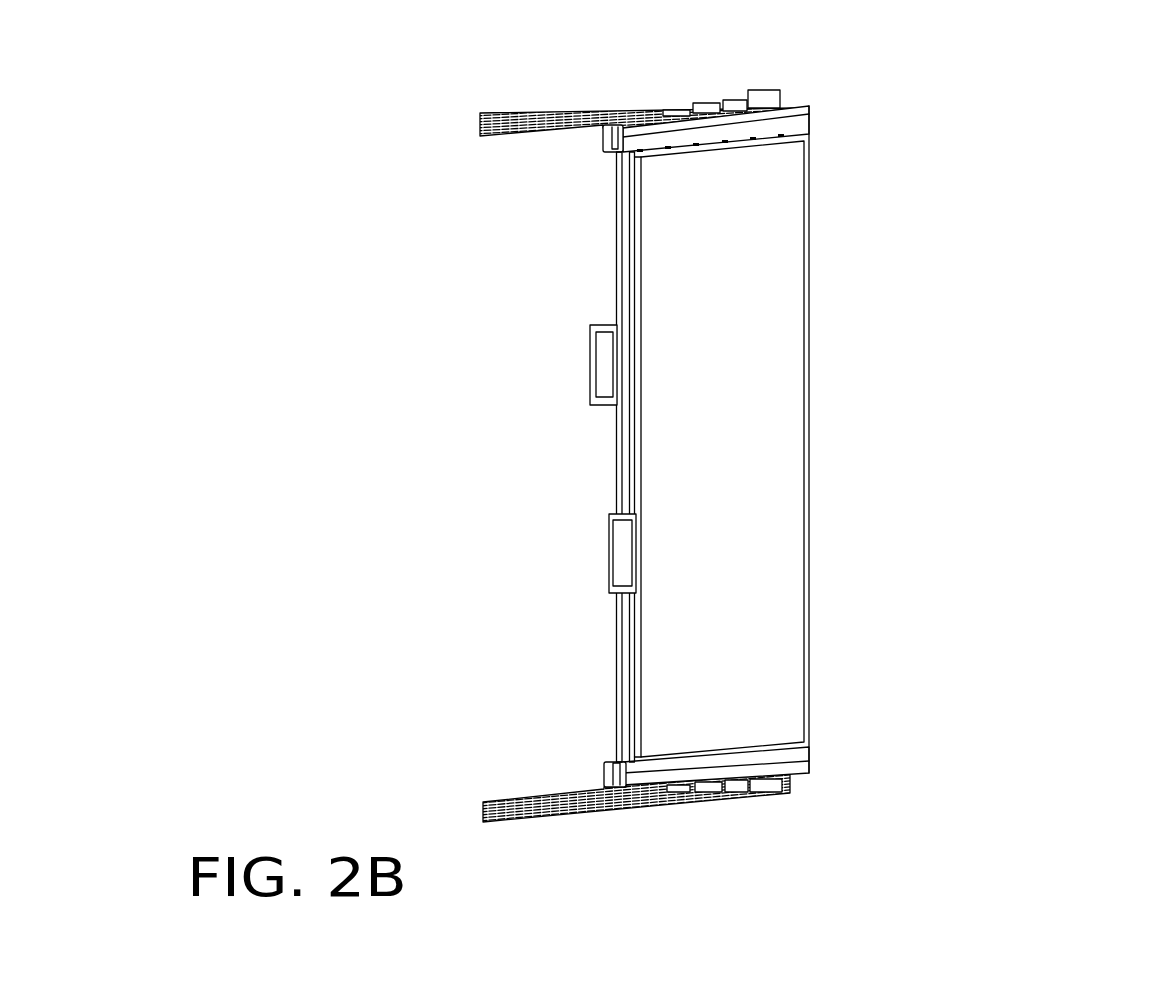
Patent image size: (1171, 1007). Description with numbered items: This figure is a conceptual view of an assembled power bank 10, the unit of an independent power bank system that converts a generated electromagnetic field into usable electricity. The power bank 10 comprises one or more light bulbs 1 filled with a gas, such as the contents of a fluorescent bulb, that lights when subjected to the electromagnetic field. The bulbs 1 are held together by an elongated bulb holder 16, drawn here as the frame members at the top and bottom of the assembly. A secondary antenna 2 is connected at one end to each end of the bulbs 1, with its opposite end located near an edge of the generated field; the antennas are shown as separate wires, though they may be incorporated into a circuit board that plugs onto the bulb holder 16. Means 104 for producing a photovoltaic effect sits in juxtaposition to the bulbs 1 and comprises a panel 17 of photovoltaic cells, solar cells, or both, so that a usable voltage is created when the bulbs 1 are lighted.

The means for producing a photovoltaic effect 104 is at (856, 366).
The secondary antenna 2 is at (765, 90).
The elongated bulb holder 16 is at (802, 130).
The light bulb 1 is at (637, 268).
The panel 17 is at (768, 445).
The power bank 10 is at (739, 388).